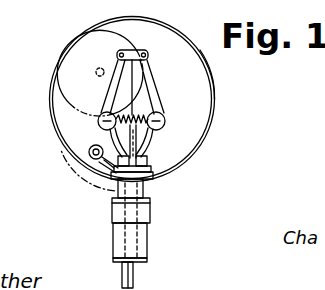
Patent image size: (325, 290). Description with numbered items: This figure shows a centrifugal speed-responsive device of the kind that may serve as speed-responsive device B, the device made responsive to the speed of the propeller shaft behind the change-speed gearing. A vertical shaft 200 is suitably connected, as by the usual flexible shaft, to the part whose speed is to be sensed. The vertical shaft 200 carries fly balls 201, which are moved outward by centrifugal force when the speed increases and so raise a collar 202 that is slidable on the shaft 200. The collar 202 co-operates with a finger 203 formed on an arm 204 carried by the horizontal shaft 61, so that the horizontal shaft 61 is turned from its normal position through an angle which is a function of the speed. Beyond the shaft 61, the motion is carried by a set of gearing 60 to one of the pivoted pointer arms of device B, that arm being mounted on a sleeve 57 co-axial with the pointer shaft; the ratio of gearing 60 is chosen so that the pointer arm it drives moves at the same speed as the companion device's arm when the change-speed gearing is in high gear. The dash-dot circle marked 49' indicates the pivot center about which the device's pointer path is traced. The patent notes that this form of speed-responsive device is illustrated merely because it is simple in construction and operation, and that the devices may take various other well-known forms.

The sleeve 57 is at (76, 43).
The speed-responsive device B is at (213, 85).
The pivot point 49' is at (72, 73).
The gearing 60 is at (67, 170).
The fly balls 201 is at (164, 124).
The collar 202 is at (150, 174).
The horizontal shaft 61 is at (95, 165).
The arm 204 is at (106, 168).
The finger 203 is at (146, 184).
The vertical shaft 200 is at (133, 276).